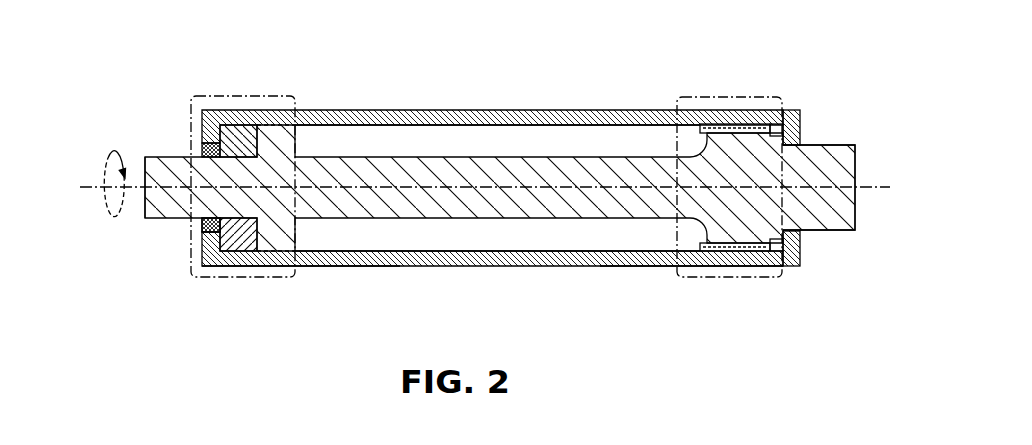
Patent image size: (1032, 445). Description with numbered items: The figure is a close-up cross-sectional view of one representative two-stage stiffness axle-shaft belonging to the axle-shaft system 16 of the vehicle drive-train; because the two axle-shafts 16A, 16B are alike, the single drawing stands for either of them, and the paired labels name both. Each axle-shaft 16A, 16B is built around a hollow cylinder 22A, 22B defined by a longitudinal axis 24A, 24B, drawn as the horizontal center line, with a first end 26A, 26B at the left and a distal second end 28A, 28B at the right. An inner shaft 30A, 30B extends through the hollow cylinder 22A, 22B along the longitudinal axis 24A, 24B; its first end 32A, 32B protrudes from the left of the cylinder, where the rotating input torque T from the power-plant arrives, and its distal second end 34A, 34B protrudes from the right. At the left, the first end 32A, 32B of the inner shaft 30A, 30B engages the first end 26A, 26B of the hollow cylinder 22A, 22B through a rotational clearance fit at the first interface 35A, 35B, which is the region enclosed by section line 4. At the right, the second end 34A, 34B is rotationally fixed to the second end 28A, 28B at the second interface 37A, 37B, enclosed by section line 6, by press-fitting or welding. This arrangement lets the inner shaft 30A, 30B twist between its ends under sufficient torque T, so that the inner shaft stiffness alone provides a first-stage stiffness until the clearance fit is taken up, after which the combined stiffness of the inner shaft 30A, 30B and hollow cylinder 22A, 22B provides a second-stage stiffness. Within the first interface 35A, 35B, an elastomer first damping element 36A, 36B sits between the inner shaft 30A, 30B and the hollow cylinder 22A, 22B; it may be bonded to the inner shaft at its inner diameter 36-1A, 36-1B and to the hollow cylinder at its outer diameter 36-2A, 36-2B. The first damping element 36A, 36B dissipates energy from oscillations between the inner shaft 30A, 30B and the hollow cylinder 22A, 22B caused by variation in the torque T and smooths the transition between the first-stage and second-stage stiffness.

The two-stage stiffness axle-shaft system 16 is at (462, 202).
The axle-shaft 16A is at (462, 186).
The axle-shaft 16B is at (462, 186).
The hollow cylinder 22A is at (492, 146).
The hollow cylinder 22B is at (538, 104).
The longitudinal axis 24A is at (465, 168).
The longitudinal axis 24B is at (465, 168).
The first end 26A is at (141, 236).
The first end 26B is at (192, 223).
The second end 28A is at (836, 220).
The second end 28B is at (792, 275).
The inner shaft 30A is at (497, 217).
The inner shaft 30B is at (524, 224).
The first end 32A is at (90, 154).
The first end 32B is at (138, 154).
The second end 34A is at (839, 157).
The second end 34B is at (842, 143).
The first interface 35A is at (309, 285).
The first interface 35B is at (297, 268).
The first damping element 36A is at (127, 217).
The first damping element 36B is at (213, 236).
The inner diameter 36-1A is at (343, 187).
The inner diameter 36-1B is at (238, 217).
The outer diameter 36-2A is at (306, 279).
The outer diameter 36-2B is at (238, 252).
The second interface 37A is at (674, 303).
The second interface 37B is at (685, 262).
The power-plant torque T is at (105, 205).
The section line 4- 4 is at (267, 96).
The section line 6- 6 is at (757, 97).